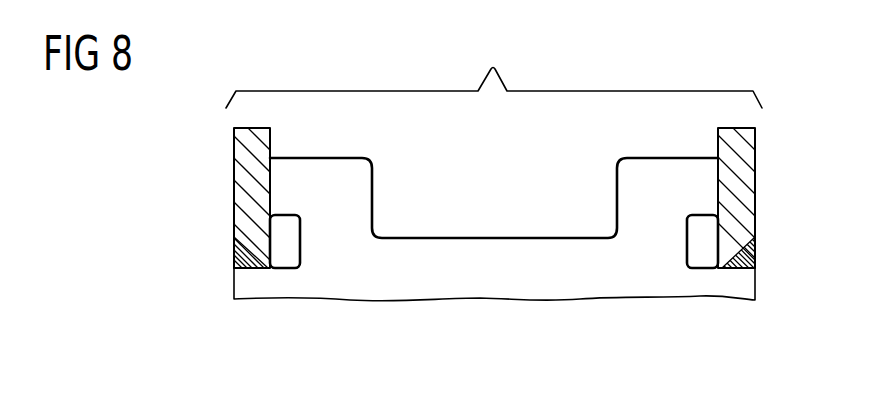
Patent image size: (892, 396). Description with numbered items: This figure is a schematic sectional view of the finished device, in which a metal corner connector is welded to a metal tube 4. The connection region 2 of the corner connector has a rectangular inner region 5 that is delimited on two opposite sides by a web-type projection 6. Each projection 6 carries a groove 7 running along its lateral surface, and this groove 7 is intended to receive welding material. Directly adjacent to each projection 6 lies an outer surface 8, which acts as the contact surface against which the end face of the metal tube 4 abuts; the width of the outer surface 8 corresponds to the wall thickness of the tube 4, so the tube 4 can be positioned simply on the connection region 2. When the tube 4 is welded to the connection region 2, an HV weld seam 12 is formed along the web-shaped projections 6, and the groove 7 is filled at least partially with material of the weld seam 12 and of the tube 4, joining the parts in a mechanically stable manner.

The connection region 2 is at (494, 70).
The metal tube 4 is at (245, 178).
The rectangular inner region 5 is at (495, 222).
The projection 6 is at (325, 170).
The groove 7 is at (288, 247).
The outer surface 8 is at (256, 272).
The HV weld seam 12 is at (233, 263).